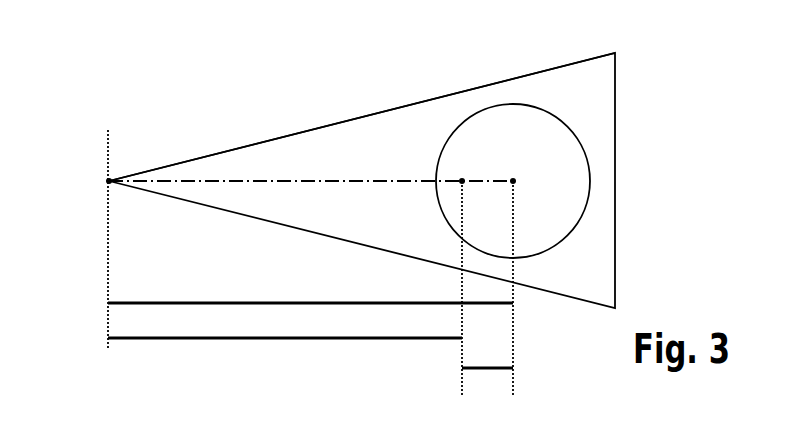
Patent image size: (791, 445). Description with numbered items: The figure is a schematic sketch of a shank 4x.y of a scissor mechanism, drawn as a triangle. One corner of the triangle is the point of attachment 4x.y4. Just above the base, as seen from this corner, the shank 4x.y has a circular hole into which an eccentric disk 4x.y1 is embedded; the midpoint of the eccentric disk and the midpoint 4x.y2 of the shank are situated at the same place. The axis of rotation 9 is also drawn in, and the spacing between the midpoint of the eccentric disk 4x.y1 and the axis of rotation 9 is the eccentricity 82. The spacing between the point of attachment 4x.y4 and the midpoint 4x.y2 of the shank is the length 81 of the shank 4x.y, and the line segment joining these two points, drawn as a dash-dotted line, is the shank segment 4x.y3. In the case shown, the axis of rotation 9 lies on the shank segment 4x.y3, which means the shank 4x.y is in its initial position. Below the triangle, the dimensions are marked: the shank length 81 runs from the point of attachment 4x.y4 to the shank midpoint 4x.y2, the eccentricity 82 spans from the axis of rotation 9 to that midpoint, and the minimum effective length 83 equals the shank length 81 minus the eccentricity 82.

The axis of rotation 9 is at (455, 145).
The point of attachment 4x.y4 is at (108, 178).
The shank segment 4x.y3 is at (237, 178).
The shank 4x.y is at (342, 158).
The eccentric disk 4x.y1 is at (502, 142).
The midpoint of the shank 4x.y2 is at (513, 181).
The length of the shank 81 is at (310, 290).
The eccentricity 82 is at (487, 385).
The minimum effective length 83 is at (285, 353).